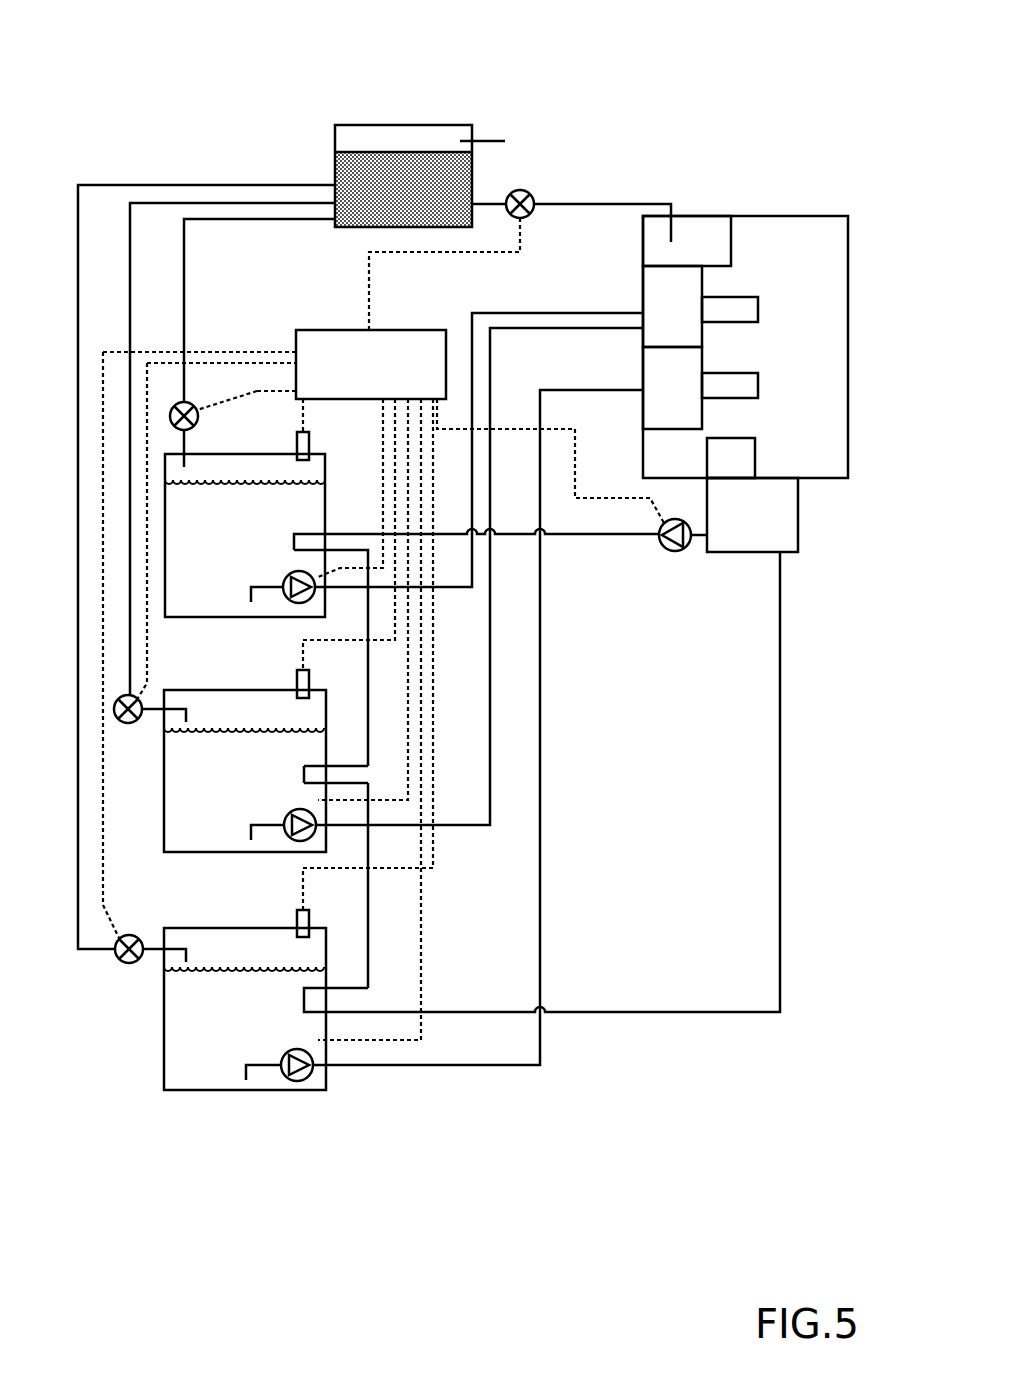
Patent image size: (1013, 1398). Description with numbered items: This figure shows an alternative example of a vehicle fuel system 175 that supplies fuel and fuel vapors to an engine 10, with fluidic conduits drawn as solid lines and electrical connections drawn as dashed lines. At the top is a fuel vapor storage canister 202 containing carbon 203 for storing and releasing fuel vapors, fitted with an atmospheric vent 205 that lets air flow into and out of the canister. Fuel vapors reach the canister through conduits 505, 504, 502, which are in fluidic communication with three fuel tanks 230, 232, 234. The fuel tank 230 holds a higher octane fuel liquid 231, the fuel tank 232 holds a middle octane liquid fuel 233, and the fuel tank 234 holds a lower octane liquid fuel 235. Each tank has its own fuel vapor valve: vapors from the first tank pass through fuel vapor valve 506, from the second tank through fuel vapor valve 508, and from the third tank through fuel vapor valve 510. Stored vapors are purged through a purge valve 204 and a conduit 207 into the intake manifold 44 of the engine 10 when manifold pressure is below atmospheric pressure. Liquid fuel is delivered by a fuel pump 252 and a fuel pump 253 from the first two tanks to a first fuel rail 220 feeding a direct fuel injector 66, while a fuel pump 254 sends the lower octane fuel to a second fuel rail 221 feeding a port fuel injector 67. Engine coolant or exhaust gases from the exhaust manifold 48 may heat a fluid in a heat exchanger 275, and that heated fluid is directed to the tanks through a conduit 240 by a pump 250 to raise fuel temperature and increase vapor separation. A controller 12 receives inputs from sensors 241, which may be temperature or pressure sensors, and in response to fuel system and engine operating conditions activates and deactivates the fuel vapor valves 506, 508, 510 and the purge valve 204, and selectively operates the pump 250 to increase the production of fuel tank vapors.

The fuel system 175 is at (104, 30).
The fuel vapor storage canister 202 is at (335, 127).
The carbon 203 is at (418, 198).
The atmospheric vent 205 is at (490, 141).
The purge valve 204 is at (529, 191).
The conduit 207 is at (548, 206).
The engine 10 is at (848, 291).
The intake manifold 44 is at (687, 241).
The first fuel rail 220 is at (672, 306).
The second fuel rail 221 is at (672, 388).
The direct fuel injector 66 is at (730, 309).
The port fuel injector 67 is at (730, 385).
The exhaust manifold 48 is at (731, 458).
The heat exchanger 275 is at (551, 745).
The conduit 505 is at (78, 227).
The conduit 504 is at (130, 272).
The conduit 502 is at (184, 292).
The controller 12 is at (383, 629).
The fuel vapor valve 506 is at (192, 402).
The sensors 241 is at (295, 443).
The fuel tank 230 is at (192, 453).
The fuel liquid 231 is at (267, 529).
The fuel pump 252 is at (290, 574).
The conduit 240 is at (578, 537).
The pump 250 is at (664, 548).
The fuel tank 232 is at (165, 691).
The liquid fuel 233 is at (267, 769).
The fuel pump 253 is at (291, 812).
The fuel vapor valve 508 is at (125, 723).
The fuel tank 234 is at (164, 929).
The liquid fuel 235 is at (267, 1007).
The fuel pump 254 is at (288, 1052).
The fuel vapor valve 510 is at (125, 963).